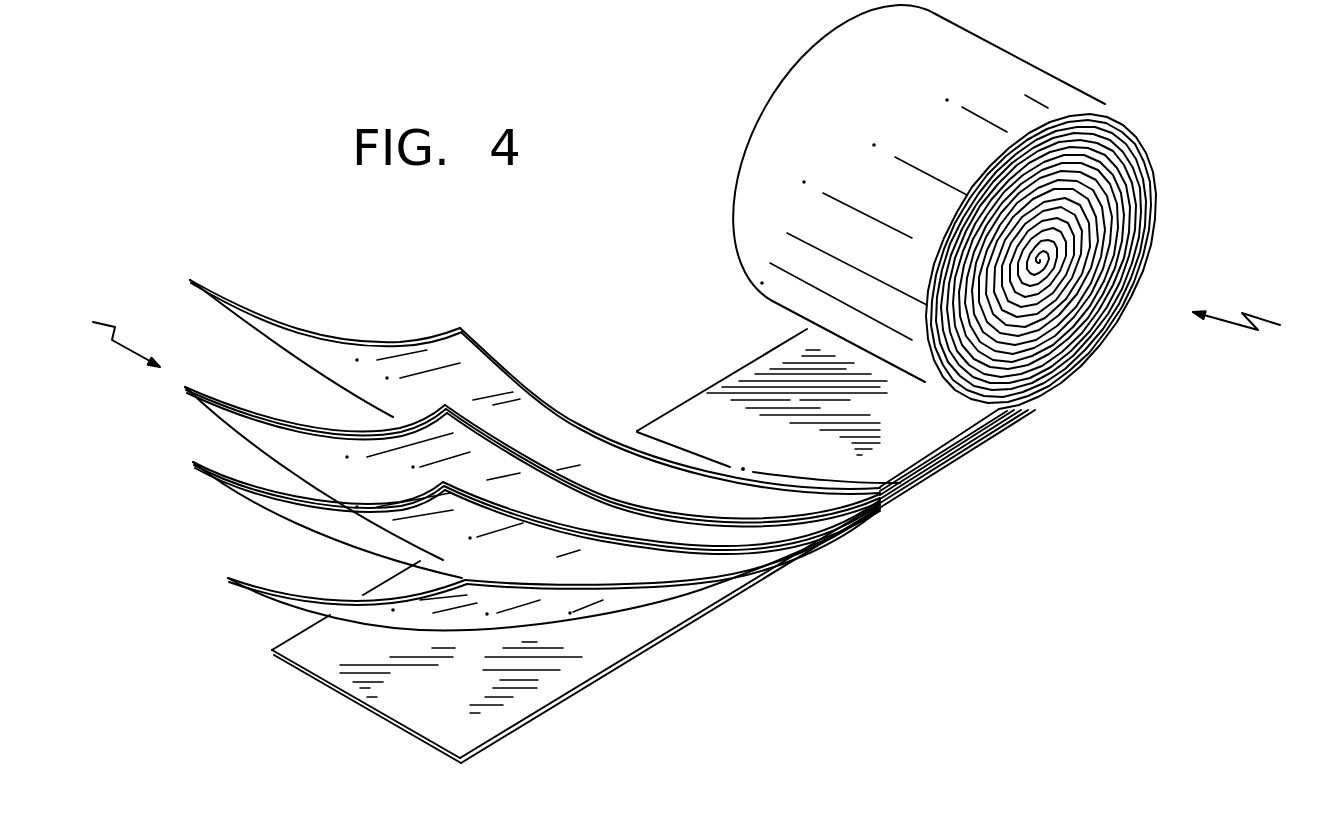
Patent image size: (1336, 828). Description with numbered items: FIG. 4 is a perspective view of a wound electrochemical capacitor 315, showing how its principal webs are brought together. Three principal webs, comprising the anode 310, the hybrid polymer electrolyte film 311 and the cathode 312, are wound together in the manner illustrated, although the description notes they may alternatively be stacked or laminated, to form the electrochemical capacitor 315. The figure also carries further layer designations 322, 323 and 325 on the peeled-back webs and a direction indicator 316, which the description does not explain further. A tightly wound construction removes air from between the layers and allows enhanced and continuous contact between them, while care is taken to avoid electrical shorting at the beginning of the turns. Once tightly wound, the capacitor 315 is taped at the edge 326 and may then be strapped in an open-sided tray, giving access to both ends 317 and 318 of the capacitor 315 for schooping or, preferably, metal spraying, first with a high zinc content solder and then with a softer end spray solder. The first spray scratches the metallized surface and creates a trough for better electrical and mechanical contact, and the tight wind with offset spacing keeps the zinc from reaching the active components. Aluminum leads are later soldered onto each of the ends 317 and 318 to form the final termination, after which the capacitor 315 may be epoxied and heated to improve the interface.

The anode 310 is at (300, 447).
The hybrid polymer electrolyte film 311 is at (615, 527).
The cathode 312 is at (477, 620).
The electrochemical capacitor 315 is at (1258, 327).
The unwinding direction 316 is at (112, 330).
The end of the capacitor 317 is at (1107, 137).
The end of the capacitor 318 is at (748, 140).
The third layer 322 is at (503, 447).
The second layer 323 is at (467, 425).
The top layer 325 is at (360, 340).
The edge 326 is at (705, 614).